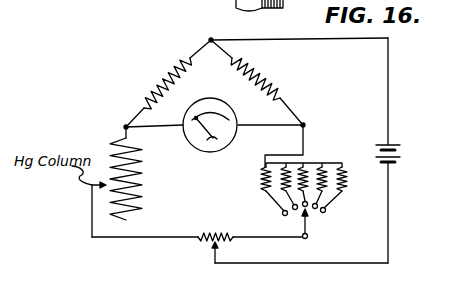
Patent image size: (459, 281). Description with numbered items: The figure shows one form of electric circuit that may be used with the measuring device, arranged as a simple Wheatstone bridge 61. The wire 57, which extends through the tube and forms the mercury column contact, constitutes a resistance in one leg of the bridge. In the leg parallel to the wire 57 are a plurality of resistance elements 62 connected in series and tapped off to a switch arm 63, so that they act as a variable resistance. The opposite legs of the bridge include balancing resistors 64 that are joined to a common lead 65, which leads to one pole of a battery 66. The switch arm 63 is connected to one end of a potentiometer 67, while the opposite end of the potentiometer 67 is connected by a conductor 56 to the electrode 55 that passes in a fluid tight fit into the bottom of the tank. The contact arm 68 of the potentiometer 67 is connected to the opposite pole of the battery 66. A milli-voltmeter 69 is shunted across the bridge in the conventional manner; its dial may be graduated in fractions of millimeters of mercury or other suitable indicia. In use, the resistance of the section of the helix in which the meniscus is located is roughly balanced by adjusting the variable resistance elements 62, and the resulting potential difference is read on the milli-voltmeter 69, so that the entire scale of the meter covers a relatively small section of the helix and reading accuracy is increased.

The electrode 55 is at (92, 237).
The conductor 56 is at (120, 238).
The wire 57 is at (143, 181).
The Wheatstone bridge 61 is at (106, 102).
The resistance elements 62 is at (322, 160).
The switch arm 63 is at (312, 228).
The balancing resistors 64 is at (166, 73).
The common lead 65 is at (211, 40).
The battery 66 is at (399, 145).
The potentiometer 67 is at (224, 229).
The contact arm 68 is at (221, 251).
The milli-voltmeter 69 is at (210, 153).